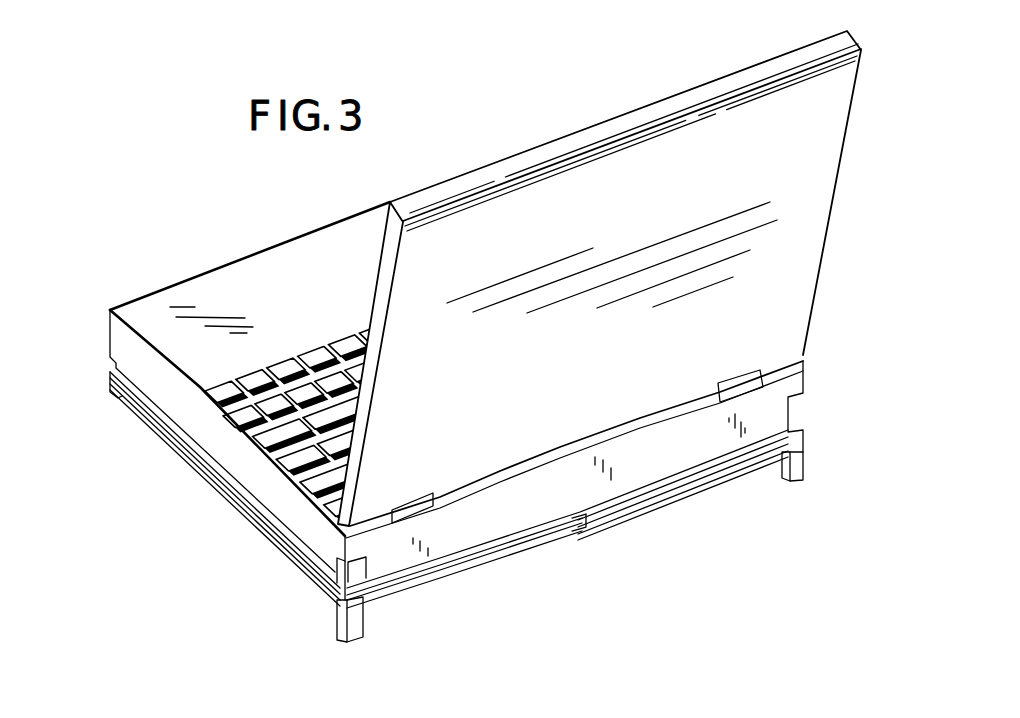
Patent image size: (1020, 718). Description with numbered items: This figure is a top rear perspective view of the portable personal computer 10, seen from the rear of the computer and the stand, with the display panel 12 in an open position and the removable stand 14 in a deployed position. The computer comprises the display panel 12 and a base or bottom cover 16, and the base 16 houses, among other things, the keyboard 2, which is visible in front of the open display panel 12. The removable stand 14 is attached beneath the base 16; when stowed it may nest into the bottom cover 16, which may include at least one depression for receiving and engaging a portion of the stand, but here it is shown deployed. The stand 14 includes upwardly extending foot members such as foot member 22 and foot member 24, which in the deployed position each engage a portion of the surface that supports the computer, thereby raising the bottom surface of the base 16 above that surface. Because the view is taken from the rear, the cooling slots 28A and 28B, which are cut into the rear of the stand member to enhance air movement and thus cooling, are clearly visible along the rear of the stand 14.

The portable personal computer 10 is at (219, 231).
The display panel 12 is at (823, 247).
The keyboard 2 is at (312, 350).
The base or bottom cover 16 is at (108, 325).
The removable stand 14 is at (200, 475).
The slot 28A is at (670, 485).
The slot 28B is at (490, 555).
The foot member 22 is at (799, 472).
The foot member 24 is at (340, 616).